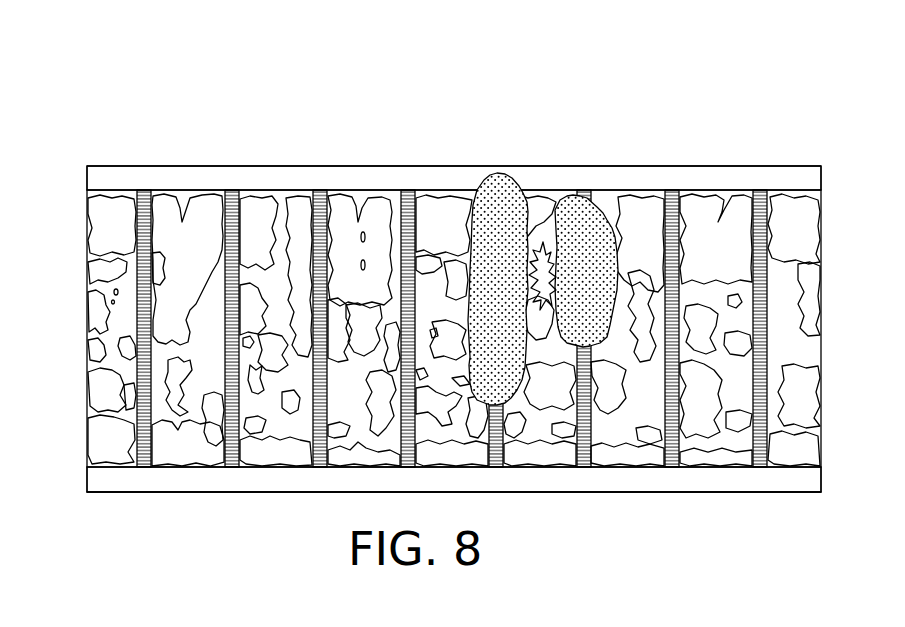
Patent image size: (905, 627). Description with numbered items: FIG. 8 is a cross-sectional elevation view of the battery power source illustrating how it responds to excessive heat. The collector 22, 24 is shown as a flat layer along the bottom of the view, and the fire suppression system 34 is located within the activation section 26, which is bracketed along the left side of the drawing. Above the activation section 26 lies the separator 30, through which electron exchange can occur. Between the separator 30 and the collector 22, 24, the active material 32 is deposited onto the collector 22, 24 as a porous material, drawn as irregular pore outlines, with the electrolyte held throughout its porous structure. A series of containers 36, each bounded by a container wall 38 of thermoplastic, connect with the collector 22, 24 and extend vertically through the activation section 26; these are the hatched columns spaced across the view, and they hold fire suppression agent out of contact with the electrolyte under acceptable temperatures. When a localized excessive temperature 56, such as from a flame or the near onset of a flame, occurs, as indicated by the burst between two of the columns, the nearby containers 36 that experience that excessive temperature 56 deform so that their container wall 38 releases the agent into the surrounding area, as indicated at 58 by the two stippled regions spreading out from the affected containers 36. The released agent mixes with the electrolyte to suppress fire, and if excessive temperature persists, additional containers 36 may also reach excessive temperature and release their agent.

The anode 22 is at (815, 478).
The cathode 24 is at (487, 518).
The activation section 26 is at (78, 191).
The separator 30 is at (818, 167).
The active material 32 is at (795, 280).
The fire suppression system 34 is at (762, 110).
The containers 36 is at (758, 190).
The container wall 38 is at (812, 323).
The localized excessive temperature 56 is at (538, 243).
The released agent area 58 is at (488, 177).